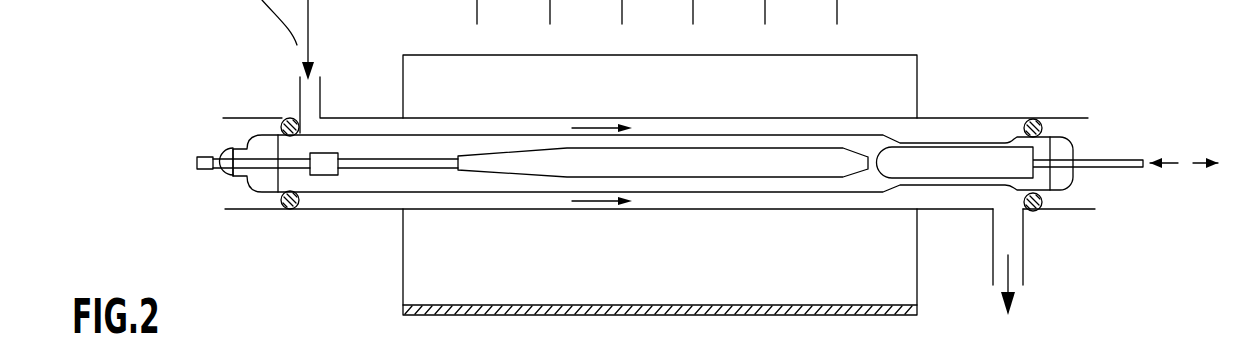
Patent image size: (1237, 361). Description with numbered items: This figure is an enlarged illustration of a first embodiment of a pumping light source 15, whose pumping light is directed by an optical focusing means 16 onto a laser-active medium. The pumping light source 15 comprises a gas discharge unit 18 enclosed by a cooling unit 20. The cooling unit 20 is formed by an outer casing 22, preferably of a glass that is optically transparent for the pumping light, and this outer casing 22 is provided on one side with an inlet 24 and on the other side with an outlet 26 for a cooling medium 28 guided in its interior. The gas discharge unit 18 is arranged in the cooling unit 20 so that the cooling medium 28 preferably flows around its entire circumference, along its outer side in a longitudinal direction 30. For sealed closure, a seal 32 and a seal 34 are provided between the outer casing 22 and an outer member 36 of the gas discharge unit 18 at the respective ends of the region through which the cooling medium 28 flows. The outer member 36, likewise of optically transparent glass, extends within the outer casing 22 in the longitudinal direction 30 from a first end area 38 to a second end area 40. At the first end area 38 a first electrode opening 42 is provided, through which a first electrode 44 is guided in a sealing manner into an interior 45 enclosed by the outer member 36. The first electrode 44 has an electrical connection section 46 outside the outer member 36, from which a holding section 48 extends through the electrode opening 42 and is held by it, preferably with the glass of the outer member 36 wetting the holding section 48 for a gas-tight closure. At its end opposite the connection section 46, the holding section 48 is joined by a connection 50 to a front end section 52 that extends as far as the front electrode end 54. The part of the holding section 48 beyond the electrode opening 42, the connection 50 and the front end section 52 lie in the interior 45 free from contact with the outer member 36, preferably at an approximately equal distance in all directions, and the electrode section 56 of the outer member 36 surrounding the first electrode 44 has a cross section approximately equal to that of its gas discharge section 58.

The pumping light source 15 is at (938, 86).
The optical focusing means 16 is at (427, 290).
The gas discharge unit 18 is at (752, 128).
The cooling unit 20 is at (1028, 100).
The outer casing 22 is at (957, 210).
The inlet 24 is at (298, 100).
The outlet 26 is at (1027, 270).
The cooling medium 28 is at (592, 200).
The longitudinal direction 30 is at (1180, 162).
The seal 32 is at (290, 208).
The seal 34 is at (1043, 212).
The outer member 36 is at (840, 208).
The first end area 38 is at (222, 181).
The second end area 40 is at (1097, 172).
The first electrode opening 42 is at (236, 152).
The first electrode 44 is at (351, 140).
The interior 45 is at (465, 178).
The electrical connection section 46 is at (205, 159).
The holding section 48 is at (240, 182).
The connection 50 is at (322, 176).
The front end section 52 is at (373, 170).
The front electrode end 54 is at (460, 152).
The electrode section 56 is at (397, 133).
The gas discharge section 58 is at (717, 193).